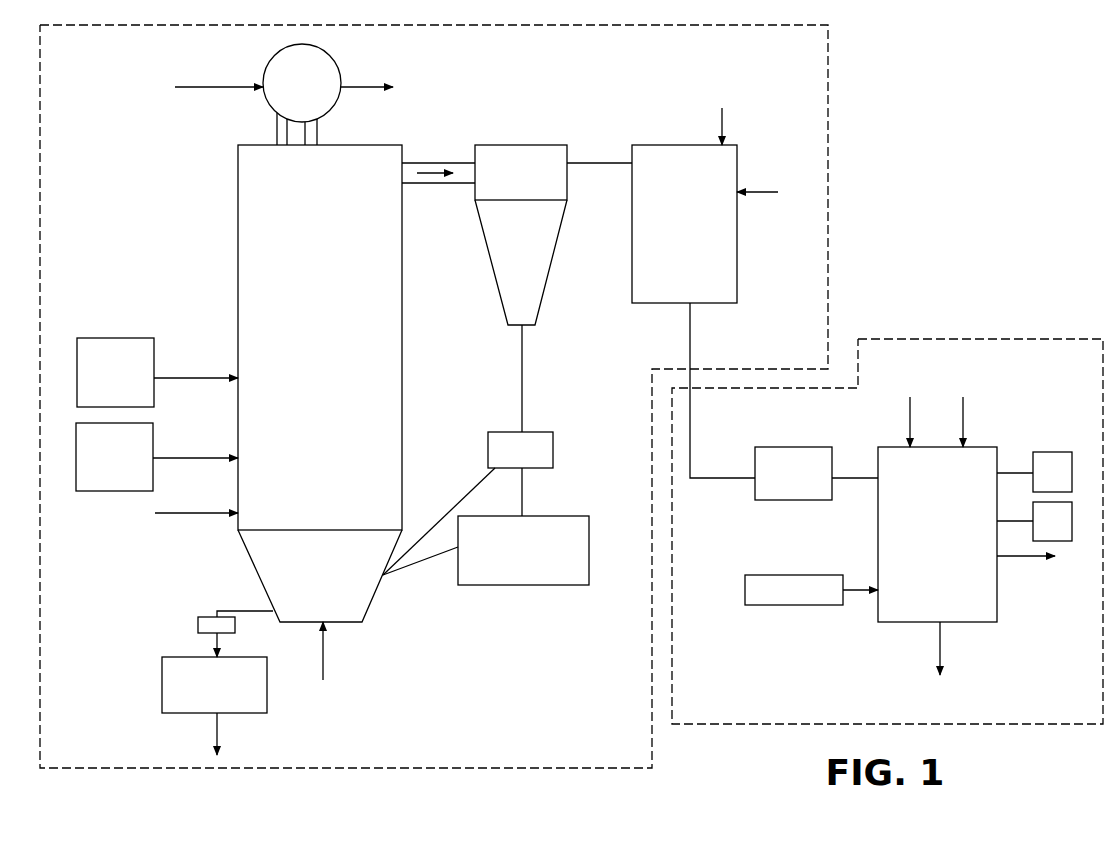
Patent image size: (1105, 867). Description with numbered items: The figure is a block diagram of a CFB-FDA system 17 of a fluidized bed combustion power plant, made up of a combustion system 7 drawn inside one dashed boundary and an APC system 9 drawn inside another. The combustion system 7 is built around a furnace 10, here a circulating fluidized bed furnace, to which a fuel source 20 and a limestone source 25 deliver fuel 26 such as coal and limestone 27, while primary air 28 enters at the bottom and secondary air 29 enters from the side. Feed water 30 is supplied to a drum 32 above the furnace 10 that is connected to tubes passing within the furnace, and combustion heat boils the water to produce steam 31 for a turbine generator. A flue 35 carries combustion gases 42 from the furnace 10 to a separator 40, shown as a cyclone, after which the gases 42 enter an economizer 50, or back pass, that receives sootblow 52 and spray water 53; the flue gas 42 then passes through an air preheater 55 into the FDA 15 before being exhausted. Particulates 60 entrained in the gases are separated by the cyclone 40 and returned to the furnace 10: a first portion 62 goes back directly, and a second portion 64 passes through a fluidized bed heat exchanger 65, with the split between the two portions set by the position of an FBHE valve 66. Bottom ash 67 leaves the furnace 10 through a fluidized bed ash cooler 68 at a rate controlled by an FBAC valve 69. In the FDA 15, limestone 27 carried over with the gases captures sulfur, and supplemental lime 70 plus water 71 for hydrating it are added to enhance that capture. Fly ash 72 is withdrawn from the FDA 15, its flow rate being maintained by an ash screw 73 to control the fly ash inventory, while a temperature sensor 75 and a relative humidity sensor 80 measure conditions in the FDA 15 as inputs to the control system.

The combustion system 7 is at (828, 185).
The APC system 9 is at (1000, 337).
The furnace 10 is at (304, 309).
The FDA 15 is at (927, 533).
The CFB-FDA system 17 is at (962, 74).
The fuel source 20 is at (102, 383).
The limestone source 25 is at (99, 463).
The fuel 26 is at (198, 375).
The limestone 27 is at (207, 455).
The primary air 28 is at (325, 647).
The secondary air 29 is at (190, 515).
The feed water 30 is at (220, 86).
The steam 31 is at (355, 82).
The drum 32 is at (289, 94).
The flue 35 is at (433, 178).
The separator 40 is at (509, 239).
The combustion gases 42 is at (433, 178).
The economizer 50 is at (672, 233).
The sootblow 52 is at (760, 193).
The spray water 53 is at (724, 122).
The air preheater 55 is at (780, 484).
The particulates 60 is at (520, 350).
The first portion 62 is at (465, 495).
The second portion 64 is at (524, 497).
The fluidized bed heat exchanger 65 is at (509, 561).
The FBHE valve 66 is at (509, 461).
The bottom ash 67 is at (245, 610).
The fluidized bed ash cooler 68 is at (200, 698).
The FBAC valve 69 is at (220, 625).
The lime 70 is at (967, 412).
The water 71 is at (912, 412).
The fly ash 72 is at (943, 637).
The ash screw 73 is at (780, 601).
The temperature sensor 75 is at (1039, 483).
The relative humidity sensor 80 is at (1039, 532).